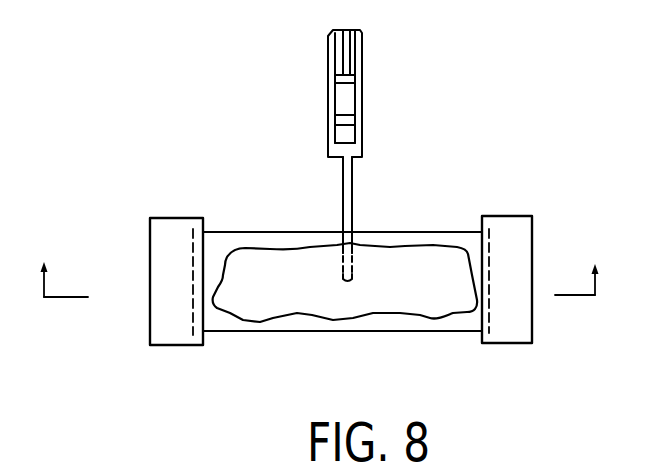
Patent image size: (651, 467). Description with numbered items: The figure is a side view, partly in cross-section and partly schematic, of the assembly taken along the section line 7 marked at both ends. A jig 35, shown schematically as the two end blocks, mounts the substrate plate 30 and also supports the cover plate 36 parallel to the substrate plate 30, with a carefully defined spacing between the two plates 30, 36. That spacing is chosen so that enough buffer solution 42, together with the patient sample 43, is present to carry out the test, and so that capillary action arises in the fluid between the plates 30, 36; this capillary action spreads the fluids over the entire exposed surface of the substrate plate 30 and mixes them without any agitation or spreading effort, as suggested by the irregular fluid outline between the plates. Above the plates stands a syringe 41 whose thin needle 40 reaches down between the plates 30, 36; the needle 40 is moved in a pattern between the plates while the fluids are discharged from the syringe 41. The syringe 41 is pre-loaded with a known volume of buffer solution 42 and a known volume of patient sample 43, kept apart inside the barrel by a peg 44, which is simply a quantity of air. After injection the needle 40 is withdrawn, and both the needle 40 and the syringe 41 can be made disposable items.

The substrate plate 30 is at (420, 332).
The cover plate 36 is at (345, 282).
The jig 35 is at (150, 253).
The section line 7- 7 is at (320, 299).
The needle 40 is at (343, 203).
The syringe 41 is at (328, 133).
The buffer solution 42 is at (345, 100).
The patient sample 43 is at (350, 138).
The peg 44 is at (328, 122).